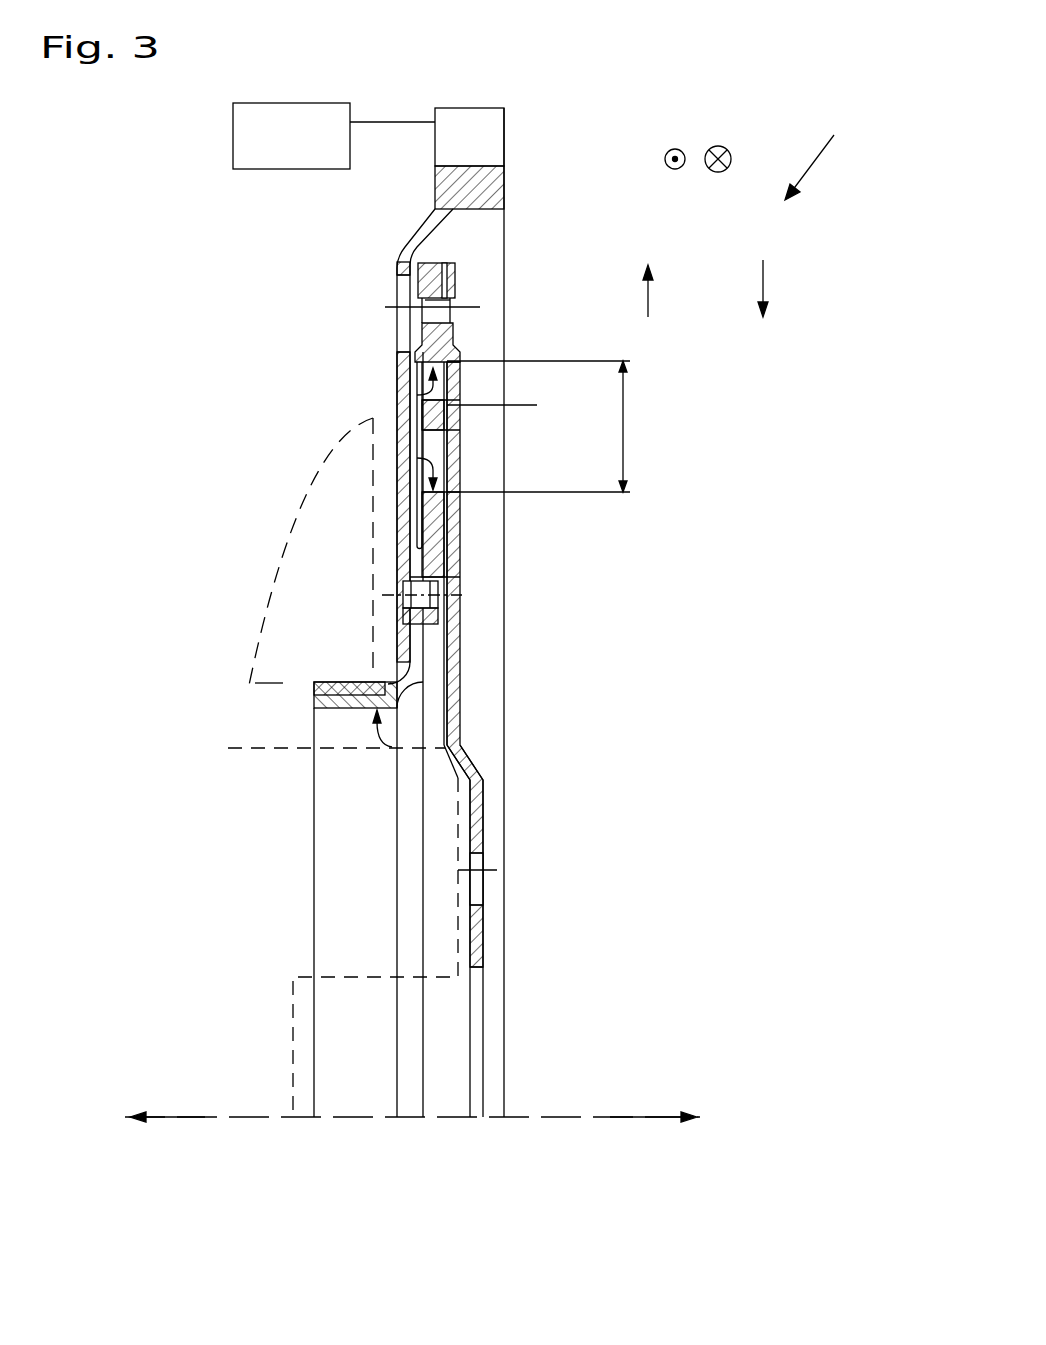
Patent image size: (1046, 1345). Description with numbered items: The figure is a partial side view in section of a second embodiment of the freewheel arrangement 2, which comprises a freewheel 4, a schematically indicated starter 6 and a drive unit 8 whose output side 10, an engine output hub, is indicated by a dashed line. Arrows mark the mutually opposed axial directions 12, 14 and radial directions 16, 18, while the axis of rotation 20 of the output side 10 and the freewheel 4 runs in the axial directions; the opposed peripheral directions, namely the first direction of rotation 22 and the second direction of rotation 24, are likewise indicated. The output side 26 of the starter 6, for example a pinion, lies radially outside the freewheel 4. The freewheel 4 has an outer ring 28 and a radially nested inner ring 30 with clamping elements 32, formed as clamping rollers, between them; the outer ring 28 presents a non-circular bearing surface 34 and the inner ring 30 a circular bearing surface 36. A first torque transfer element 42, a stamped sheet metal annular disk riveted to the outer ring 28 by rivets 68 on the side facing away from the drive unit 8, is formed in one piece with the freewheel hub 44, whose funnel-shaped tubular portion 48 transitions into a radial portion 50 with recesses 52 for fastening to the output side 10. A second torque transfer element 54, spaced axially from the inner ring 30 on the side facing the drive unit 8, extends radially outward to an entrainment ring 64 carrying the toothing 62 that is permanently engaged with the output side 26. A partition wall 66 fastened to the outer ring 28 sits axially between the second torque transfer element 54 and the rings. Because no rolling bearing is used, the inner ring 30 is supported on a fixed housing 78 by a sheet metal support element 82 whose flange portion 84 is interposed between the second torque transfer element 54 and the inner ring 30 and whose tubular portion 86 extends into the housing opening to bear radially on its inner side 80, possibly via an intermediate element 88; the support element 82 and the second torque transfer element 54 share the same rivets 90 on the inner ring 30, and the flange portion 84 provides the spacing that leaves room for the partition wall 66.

The freewheel arrangement 2 is at (821, 151).
The freewheel 4 is at (467, 428).
The starter 6 is at (298, 148).
The drive unit 8 is at (166, 893).
The output side 10 is at (280, 752).
The axial direction 12 is at (648, 1117).
The axial direction 14 is at (185, 1117).
The radial direction 16 is at (648, 303).
The radial direction 18 is at (763, 277).
The axis of rotation 20 is at (525, 1120).
The first direction of rotation 22 is at (686, 148).
The second direction of rotation 24 is at (726, 146).
The output side 26 is at (393, 122).
The outer ring 28 is at (440, 272).
The inner ring 30 is at (432, 517).
The clamping elements 32 is at (432, 443).
The bearing surface 34 is at (459, 392).
The bearing surface 36 is at (412, 432).
The first torque transfer element 42 is at (453, 462).
The freewheel hub 44 is at (485, 806).
The tubular portion 48 is at (467, 763).
The radial portion 50 is at (478, 919).
The recesses 52 is at (475, 848).
The second torque transfer element 54 is at (407, 358).
The toothing 62 is at (506, 131).
The entrainment ring 64 is at (483, 190).
The partition wall 66 is at (416, 392).
The rivets 68 is at (430, 302).
The fixed housing 78 is at (337, 480).
The inner side 80 is at (266, 698).
The support element 82 is at (392, 747).
The flange portion 84 is at (421, 615).
The tubular portion 86 is at (328, 702).
The intermediate element 88 is at (358, 688).
The rivets 90 is at (422, 587).